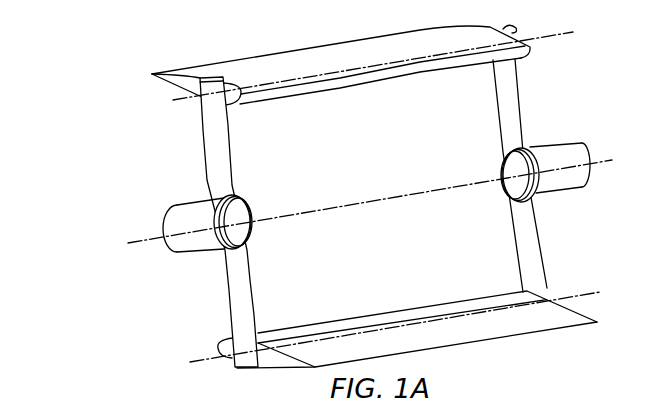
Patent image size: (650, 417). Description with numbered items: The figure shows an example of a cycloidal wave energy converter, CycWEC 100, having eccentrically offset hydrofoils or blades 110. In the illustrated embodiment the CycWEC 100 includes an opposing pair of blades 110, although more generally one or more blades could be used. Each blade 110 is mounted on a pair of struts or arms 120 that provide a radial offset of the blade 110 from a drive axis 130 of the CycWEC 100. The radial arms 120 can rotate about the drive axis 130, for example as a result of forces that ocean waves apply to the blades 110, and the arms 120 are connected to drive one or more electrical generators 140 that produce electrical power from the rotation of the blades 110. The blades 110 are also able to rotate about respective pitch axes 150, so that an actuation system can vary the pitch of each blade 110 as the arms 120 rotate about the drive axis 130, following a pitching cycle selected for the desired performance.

The CycWEC 100 is at (58, 74).
The blade 110 is at (272, 58).
The strut or arm 120 is at (229, 165).
The drive axis 130 is at (140, 236).
The electrical generator 140 is at (189, 254).
The pitch axis 150 is at (553, 37).